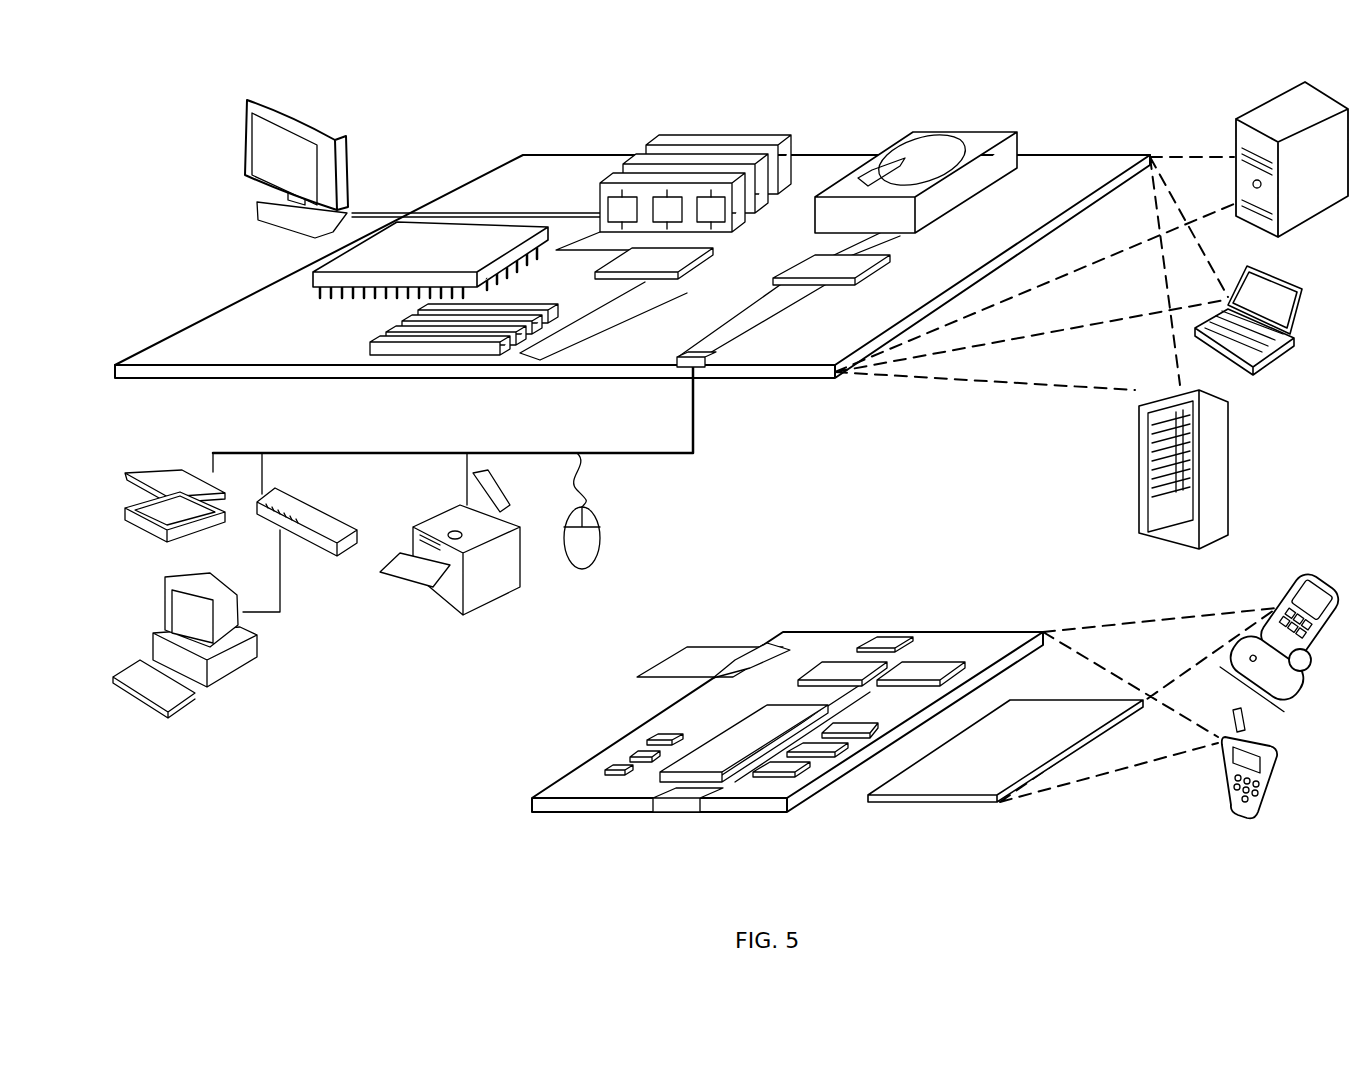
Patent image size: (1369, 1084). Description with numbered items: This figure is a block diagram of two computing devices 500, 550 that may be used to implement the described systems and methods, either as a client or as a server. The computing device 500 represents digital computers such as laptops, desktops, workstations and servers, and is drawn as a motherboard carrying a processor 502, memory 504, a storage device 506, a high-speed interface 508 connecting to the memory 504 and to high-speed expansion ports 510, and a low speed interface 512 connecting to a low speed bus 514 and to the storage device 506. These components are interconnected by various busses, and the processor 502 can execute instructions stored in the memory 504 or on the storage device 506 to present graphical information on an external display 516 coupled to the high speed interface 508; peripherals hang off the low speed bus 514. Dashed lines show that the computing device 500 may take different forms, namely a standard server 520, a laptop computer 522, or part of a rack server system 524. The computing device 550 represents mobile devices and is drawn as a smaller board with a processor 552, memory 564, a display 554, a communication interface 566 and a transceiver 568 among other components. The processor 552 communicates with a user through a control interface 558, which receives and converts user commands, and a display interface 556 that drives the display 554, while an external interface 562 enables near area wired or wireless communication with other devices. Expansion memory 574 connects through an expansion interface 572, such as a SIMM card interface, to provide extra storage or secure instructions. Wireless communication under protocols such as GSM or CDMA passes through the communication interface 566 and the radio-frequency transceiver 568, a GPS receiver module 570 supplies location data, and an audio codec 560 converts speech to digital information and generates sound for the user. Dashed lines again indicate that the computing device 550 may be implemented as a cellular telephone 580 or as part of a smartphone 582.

The computing device 500 is at (447, 114).
The processor 502 is at (313, 274).
The memory 504 is at (665, 148).
The storage device 506 is at (913, 133).
The high-speed interface 508 is at (630, 262).
The high-speed expansion ports 510 is at (393, 337).
The low speed interface 512 is at (808, 262).
The low speed bus 514 is at (700, 363).
The display 516 is at (245, 98).
The standard server 520 is at (1236, 140).
The laptop computer 522 is at (1300, 296).
The rack server system 524 is at (1139, 492).
The computing device 550 is at (508, 818).
The processor 552 is at (717, 767).
The display 554 is at (962, 785).
The display interface 556 is at (787, 772).
The control interface 558 is at (823, 752).
The audio codec 560 is at (852, 732).
The external interface 562 is at (680, 800).
The memory 564 is at (630, 757).
The communication interface 566 is at (840, 670).
The transceiver 568 is at (922, 670).
The GPS receiver module 570 is at (893, 636).
The expansion interface 572 is at (767, 643).
The expansion memory 574 is at (688, 645).
The cellular telephone 580 is at (1287, 585).
The smartphone 582 is at (1227, 765).